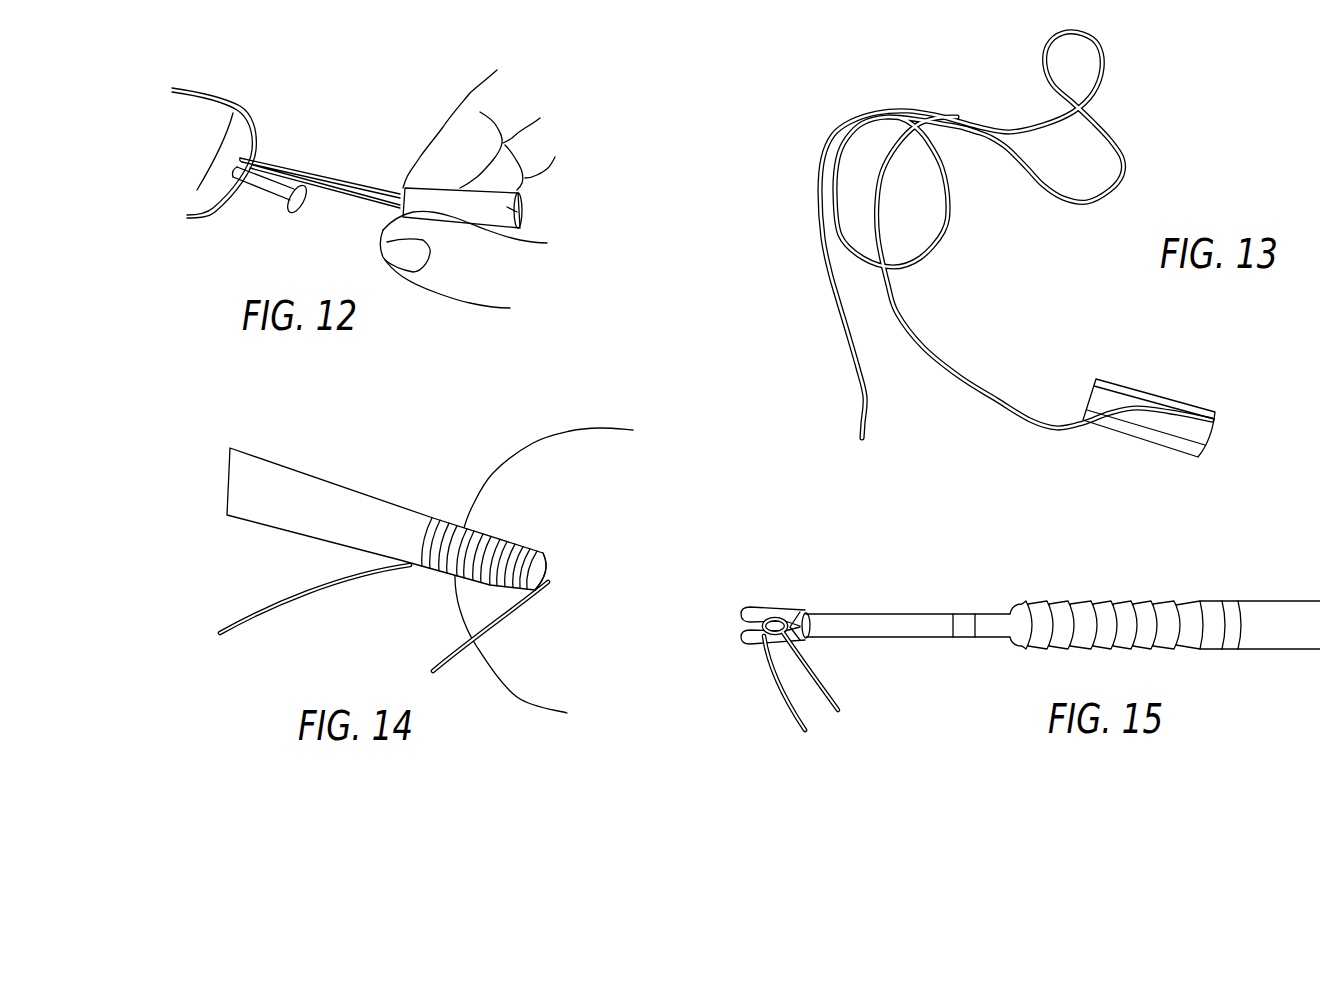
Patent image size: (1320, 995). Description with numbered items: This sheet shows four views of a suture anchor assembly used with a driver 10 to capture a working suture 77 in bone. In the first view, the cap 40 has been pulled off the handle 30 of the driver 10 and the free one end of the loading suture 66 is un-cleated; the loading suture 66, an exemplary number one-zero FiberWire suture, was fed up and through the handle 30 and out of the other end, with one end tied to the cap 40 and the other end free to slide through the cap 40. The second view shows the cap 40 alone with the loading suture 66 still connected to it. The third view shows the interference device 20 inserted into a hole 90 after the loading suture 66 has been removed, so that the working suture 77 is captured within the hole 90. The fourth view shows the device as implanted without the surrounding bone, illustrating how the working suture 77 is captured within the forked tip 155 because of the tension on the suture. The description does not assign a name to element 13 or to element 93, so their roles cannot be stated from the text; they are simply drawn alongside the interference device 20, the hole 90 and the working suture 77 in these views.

In FIG. 15, the driver 10 is at (1303, 620).
In FIG. 15, the shaft 13 is at (920, 613).
In FIG. 14, the interference device 20 is at (515, 553).
In FIG. 15, the interference device 20 is at (1150, 602).
In FIG. 12, the handle 30 is at (233, 106).
In FIG. 12, the cap 40 is at (522, 223).
In FIG. 13, the cap 40 is at (1163, 408).
In FIG. 12, the loading suture 66 is at (327, 188).
In FIG. 13, the loading suture 66 is at (1012, 127).
In FIG. 14, the working suture 77 is at (293, 597).
In FIG. 15, the working suture 77 is at (792, 707).
In FIG. 14, the hole 90 is at (553, 572).
In FIG. 14, the bone tunnel 93 is at (583, 432).
In FIG. 15, the forked tip 155 is at (780, 603).